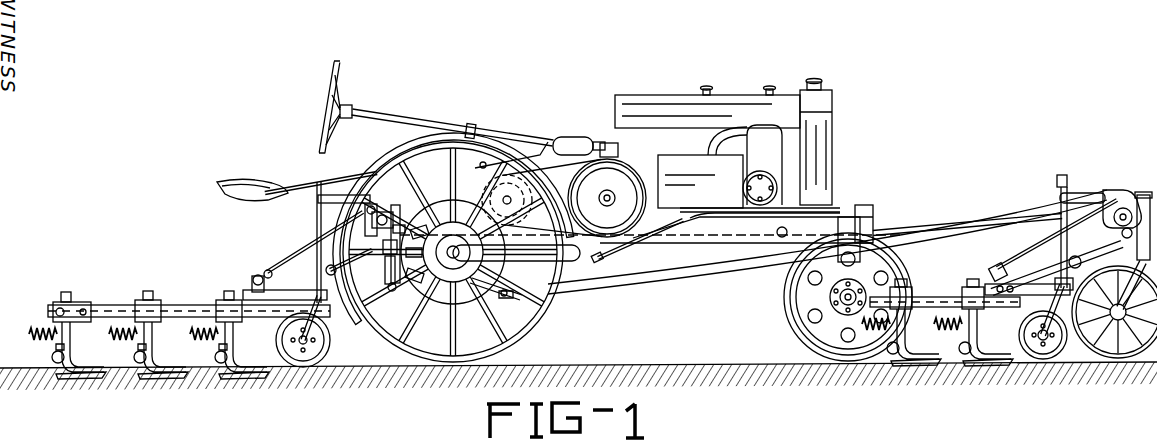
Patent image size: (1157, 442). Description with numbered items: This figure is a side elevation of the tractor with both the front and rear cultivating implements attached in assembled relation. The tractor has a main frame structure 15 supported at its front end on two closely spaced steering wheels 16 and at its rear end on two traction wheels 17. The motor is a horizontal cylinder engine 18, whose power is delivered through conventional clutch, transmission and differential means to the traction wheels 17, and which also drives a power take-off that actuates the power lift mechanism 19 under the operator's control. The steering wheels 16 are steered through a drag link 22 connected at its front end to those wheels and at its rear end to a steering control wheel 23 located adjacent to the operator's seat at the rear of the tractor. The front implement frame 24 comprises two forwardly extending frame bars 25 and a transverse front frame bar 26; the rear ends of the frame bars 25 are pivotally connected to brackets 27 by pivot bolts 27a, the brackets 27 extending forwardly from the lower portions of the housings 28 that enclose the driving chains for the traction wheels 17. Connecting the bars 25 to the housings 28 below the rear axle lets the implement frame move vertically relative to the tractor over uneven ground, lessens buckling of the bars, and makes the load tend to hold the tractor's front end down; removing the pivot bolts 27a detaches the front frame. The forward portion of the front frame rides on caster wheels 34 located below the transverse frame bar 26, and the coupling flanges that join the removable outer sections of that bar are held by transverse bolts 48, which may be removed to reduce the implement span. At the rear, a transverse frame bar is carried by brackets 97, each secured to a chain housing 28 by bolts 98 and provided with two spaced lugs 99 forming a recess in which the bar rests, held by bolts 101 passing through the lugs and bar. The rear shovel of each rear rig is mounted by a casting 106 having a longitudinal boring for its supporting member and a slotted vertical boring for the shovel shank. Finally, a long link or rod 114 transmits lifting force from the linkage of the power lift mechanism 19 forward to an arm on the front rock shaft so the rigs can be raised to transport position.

The main frame structure 15 is at (695, 230).
The steering wheels 16 is at (790, 322).
The traction wheels 17 is at (524, 331).
The horizontal cylinder engine 18 is at (688, 168).
The power lift mechanism 19 is at (600, 262).
The drag link 22 is at (725, 218).
The steering control wheel 23 is at (337, 63).
The front implement frame 24 is at (1051, 206).
The forwardly extending frame bars 25 is at (740, 272).
The transverse front frame bar 26 is at (1134, 197).
The brackets 27 is at (496, 310).
The pivot bolts 27a is at (505, 297).
The housings 28 is at (416, 283).
The caster wheels 34 is at (1113, 358).
The transverse bolts 48 is at (1122, 198).
The brackets 97 is at (390, 252).
The bolts 98 is at (393, 267).
The lugs 99 is at (372, 229).
The bolts 101 is at (407, 207).
The casting 106 is at (82, 302).
The link or rod 114 is at (922, 230).